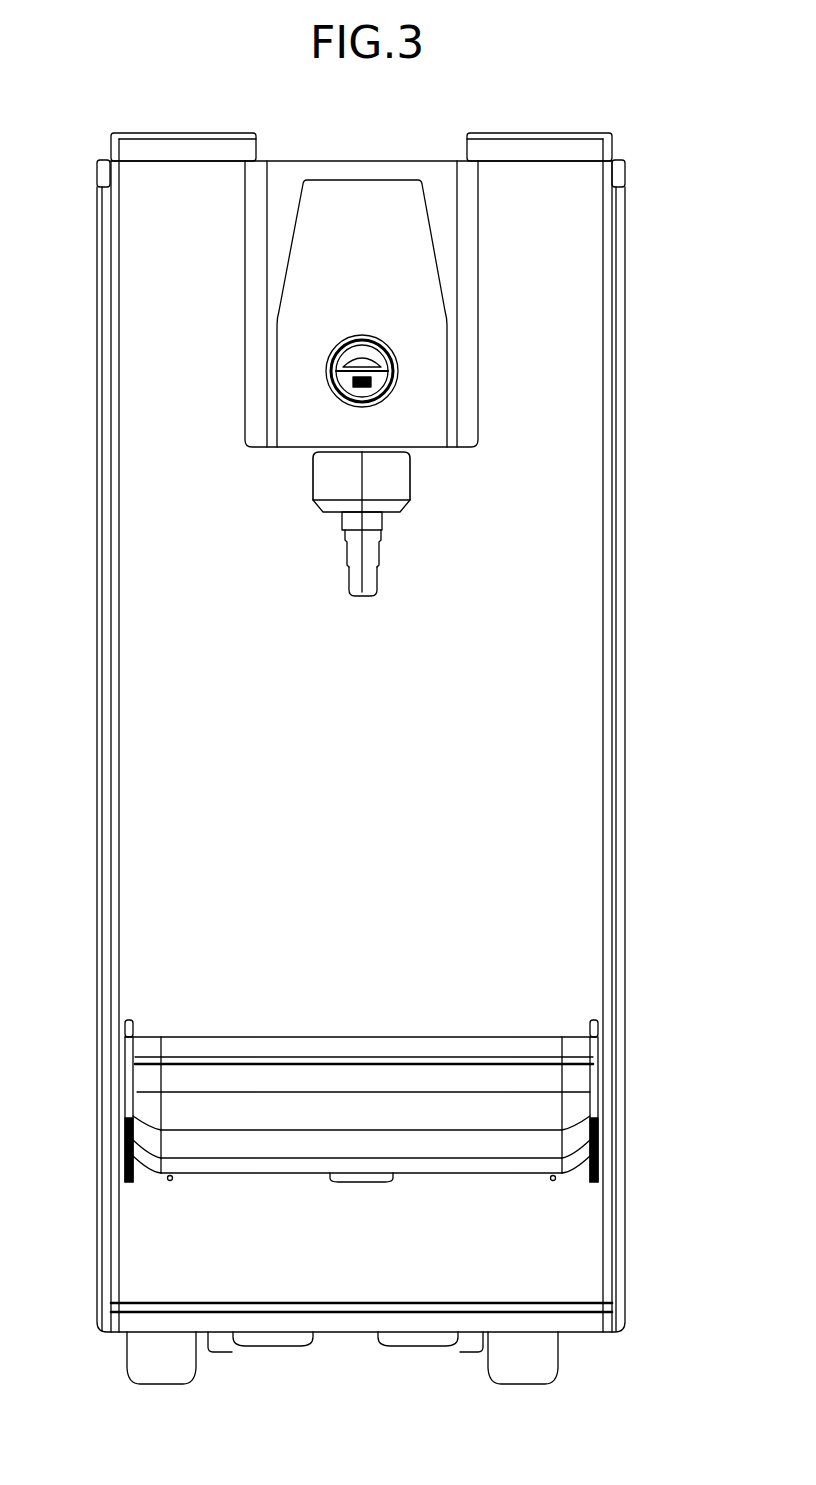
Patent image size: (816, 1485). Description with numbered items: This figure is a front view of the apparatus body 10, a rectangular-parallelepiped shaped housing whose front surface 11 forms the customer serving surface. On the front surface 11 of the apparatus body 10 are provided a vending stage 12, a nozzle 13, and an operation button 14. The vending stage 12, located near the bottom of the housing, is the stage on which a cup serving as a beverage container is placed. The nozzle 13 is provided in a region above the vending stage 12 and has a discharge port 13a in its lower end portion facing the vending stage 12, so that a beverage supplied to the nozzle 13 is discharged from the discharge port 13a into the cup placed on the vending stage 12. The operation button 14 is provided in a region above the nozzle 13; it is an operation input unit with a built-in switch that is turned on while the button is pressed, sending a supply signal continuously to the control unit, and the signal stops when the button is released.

The apparatus body 10 is at (640, 672).
The front surface 11 is at (568, 760).
The vending stage 12 is at (497, 1035).
The nozzle 13 is at (381, 555).
The discharge port 13a is at (370, 596).
The operation button 14 is at (398, 365).